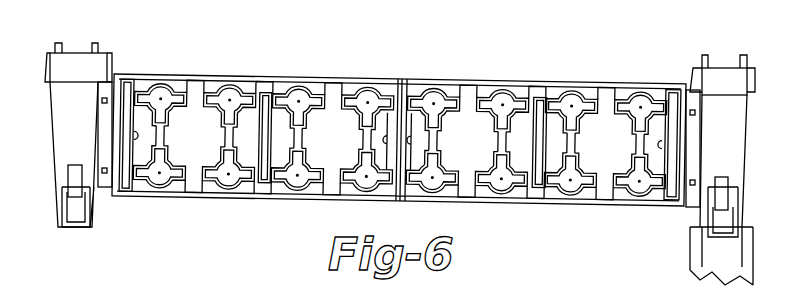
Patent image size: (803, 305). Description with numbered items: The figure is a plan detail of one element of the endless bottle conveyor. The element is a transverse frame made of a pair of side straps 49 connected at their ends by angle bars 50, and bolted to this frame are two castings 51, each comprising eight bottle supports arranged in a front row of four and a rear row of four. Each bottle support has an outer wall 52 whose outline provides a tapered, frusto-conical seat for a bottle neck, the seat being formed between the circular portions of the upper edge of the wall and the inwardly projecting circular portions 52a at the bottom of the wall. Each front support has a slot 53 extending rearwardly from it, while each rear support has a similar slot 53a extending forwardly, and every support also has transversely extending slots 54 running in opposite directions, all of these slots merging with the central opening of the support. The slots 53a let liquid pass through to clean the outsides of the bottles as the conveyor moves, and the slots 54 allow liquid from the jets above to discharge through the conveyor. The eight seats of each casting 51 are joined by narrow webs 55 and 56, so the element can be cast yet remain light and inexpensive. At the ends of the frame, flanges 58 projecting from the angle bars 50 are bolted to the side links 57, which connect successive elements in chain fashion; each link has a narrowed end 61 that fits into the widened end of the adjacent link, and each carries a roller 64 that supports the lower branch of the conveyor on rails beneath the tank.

The side straps 49 is at (342, 77).
The angle bars 50 is at (677, 96).
The castings 51 is at (287, 137).
The outer wall 52 is at (633, 172).
The inwardly projecting circular portions 52a is at (596, 174).
The slot 53 is at (640, 132).
The slot 53a is at (640, 147).
The transversely extending slots 54 is at (620, 100).
The narrow web 55 is at (607, 100).
The narrow web 56 is at (508, 140).
The side links 57 is at (738, 148).
The flanges 58 is at (695, 143).
The narrowed end 61 is at (78, 215).
The roller 64 is at (75, 182).